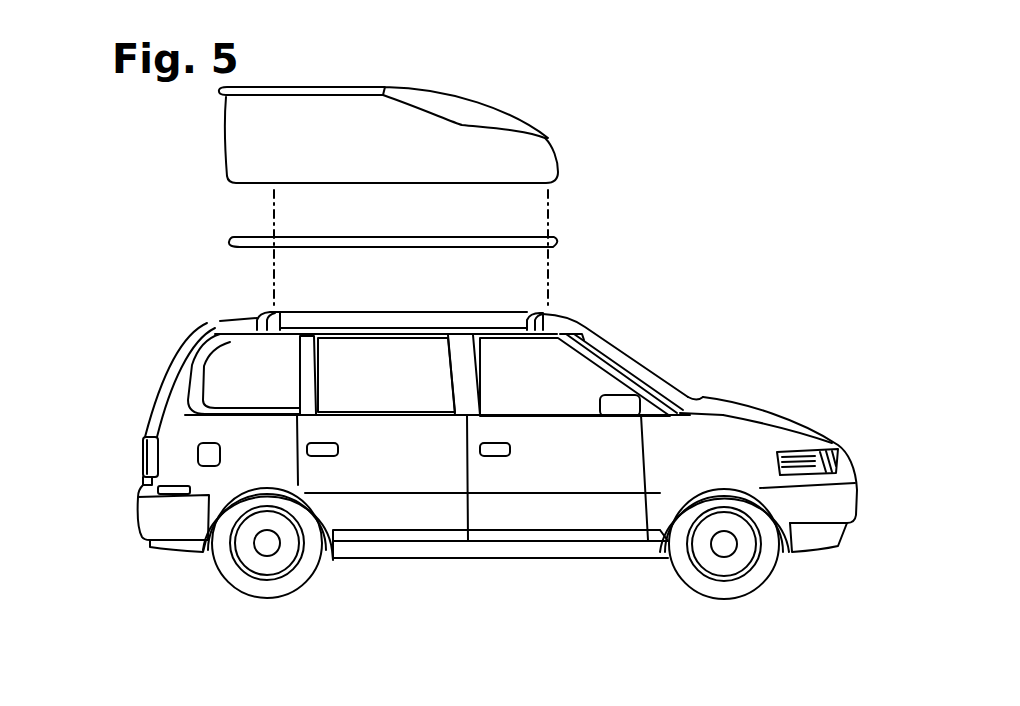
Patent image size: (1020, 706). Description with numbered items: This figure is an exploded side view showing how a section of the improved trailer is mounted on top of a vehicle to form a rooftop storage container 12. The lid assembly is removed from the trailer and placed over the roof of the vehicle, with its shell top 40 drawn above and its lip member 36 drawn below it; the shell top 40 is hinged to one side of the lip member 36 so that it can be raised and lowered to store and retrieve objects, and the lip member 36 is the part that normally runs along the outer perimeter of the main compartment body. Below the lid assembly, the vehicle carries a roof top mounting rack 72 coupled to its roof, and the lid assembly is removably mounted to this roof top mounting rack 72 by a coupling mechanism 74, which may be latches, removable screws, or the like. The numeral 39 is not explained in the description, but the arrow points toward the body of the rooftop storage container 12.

The rooftop storage container 12 is at (371, 99).
The lip member 36 is at (560, 242).
The container body 39 is at (174, 162).
The shell top 40 is at (450, 77).
The roof top mounting rack 72 is at (270, 312).
The coupling mechanism 74 is at (222, 321).